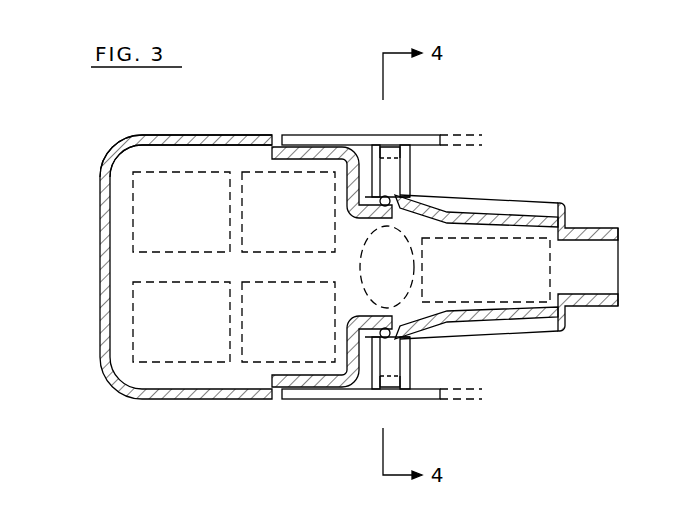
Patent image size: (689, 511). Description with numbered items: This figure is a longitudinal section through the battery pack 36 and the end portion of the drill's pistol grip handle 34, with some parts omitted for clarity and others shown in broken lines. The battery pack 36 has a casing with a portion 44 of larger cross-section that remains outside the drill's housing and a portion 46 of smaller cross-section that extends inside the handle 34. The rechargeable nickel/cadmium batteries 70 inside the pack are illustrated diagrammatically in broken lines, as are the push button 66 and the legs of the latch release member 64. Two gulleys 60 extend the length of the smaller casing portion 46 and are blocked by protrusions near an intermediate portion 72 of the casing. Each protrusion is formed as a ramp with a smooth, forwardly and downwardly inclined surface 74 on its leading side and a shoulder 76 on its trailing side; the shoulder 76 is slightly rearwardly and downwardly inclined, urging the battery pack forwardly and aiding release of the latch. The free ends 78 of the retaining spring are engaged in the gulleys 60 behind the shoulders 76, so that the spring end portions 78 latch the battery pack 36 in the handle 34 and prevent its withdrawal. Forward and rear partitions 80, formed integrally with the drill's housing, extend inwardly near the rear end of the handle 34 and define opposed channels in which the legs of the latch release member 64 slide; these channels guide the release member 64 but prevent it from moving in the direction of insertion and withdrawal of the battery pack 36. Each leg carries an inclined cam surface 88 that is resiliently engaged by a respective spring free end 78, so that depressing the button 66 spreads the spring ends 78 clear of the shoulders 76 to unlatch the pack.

The pistol grip handle 34 is at (440, 135).
The battery pack 36 is at (165, 406).
The portion of larger cross-section 44 is at (236, 135).
The portion of smaller cross-section 46 is at (545, 203).
The longitudinal gulleys 60 is at (497, 201).
The latch release member 64 is at (378, 143).
The push button 66 is at (465, 327).
The rechargeable nickel/cadmium batteries 70 is at (150, 192).
The intermediate portion 72 is at (306, 147).
The inclined surface 74 is at (440, 199).
The shoulder 76 is at (405, 205).
The free ends of the retaining spring 78 is at (380, 202).
The partitions 80 is at (418, 145).
The cam surface 88 is at (410, 368).